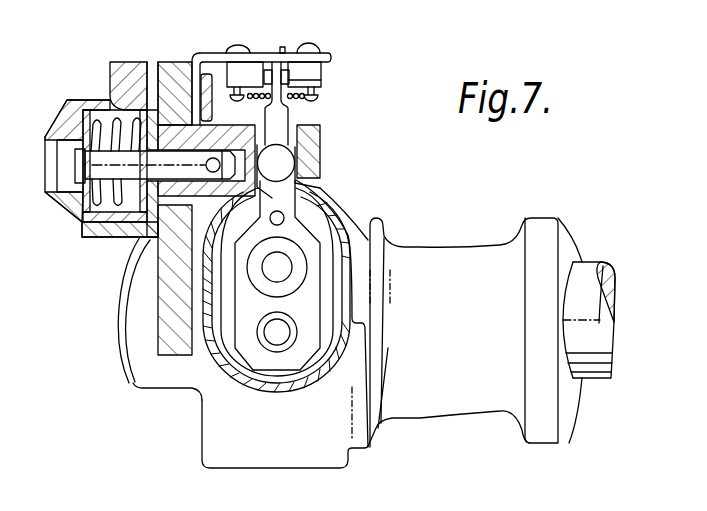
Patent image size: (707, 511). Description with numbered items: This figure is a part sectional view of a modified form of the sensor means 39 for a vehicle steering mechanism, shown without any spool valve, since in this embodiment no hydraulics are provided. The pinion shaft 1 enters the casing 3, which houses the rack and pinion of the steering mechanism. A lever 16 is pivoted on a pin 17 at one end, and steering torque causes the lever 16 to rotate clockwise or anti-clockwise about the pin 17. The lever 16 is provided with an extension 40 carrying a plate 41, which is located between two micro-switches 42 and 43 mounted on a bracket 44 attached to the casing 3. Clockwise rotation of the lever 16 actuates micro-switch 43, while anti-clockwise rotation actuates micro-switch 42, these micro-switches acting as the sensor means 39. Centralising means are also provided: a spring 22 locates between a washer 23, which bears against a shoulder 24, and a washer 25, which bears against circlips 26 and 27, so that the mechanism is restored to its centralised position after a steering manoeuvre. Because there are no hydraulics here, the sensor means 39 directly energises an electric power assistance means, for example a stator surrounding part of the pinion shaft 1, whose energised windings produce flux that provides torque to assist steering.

The pinion shaft 1 is at (288, 252).
The casing 3 is at (218, 440).
The lever 16 is at (243, 300).
The pin 17 is at (270, 340).
The spring 22 is at (98, 210).
The washer 23 is at (120, 208).
The shoulder 24 is at (120, 95).
The washer 25 is at (87, 238).
The circlip 26 is at (85, 125).
The circlip 27 is at (72, 150).
The sensor means 39 is at (282, 47).
The extension 40 is at (276, 122).
The plate 41 is at (322, 82).
The micro-switch 42 is at (242, 72).
The micro-switch 43 is at (306, 72).
The bracket 44 is at (200, 60).